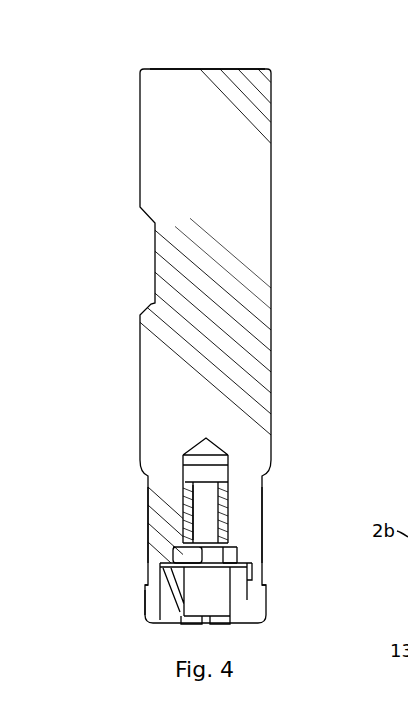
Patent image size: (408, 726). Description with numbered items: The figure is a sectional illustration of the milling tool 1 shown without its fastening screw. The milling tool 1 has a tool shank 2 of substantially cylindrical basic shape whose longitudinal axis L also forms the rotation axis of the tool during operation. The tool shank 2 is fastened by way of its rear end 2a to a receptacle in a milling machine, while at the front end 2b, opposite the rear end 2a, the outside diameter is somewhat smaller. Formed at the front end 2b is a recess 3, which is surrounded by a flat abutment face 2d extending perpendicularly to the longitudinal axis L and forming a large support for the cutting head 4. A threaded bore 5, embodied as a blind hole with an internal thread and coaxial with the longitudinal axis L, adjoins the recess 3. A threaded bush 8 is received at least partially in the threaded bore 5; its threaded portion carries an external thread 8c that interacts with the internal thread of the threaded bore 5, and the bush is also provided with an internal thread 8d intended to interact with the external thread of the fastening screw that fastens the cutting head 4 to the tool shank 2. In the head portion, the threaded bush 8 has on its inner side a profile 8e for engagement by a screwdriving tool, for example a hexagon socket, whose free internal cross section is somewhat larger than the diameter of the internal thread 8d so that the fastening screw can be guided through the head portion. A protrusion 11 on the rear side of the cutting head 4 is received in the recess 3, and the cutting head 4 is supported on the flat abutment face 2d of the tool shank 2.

The milling tool 1 is at (110, 157).
The tool shank 2 is at (248, 248).
The rear end 2a is at (221, 70).
The front end 2b is at (158, 515).
The flat abutment face 2d is at (153, 588).
The recess 3 is at (252, 572).
The cutting head 4 is at (256, 608).
The threaded bore 5 is at (225, 472).
The threaded bush 8 is at (223, 543).
The external thread 8c is at (229, 527).
The internal thread 8d is at (188, 508).
The profile for engagement by a screwdriving tool 8e is at (200, 552).
The protrusion 11 is at (234, 577).
The longitudinal axis L is at (207, 102).